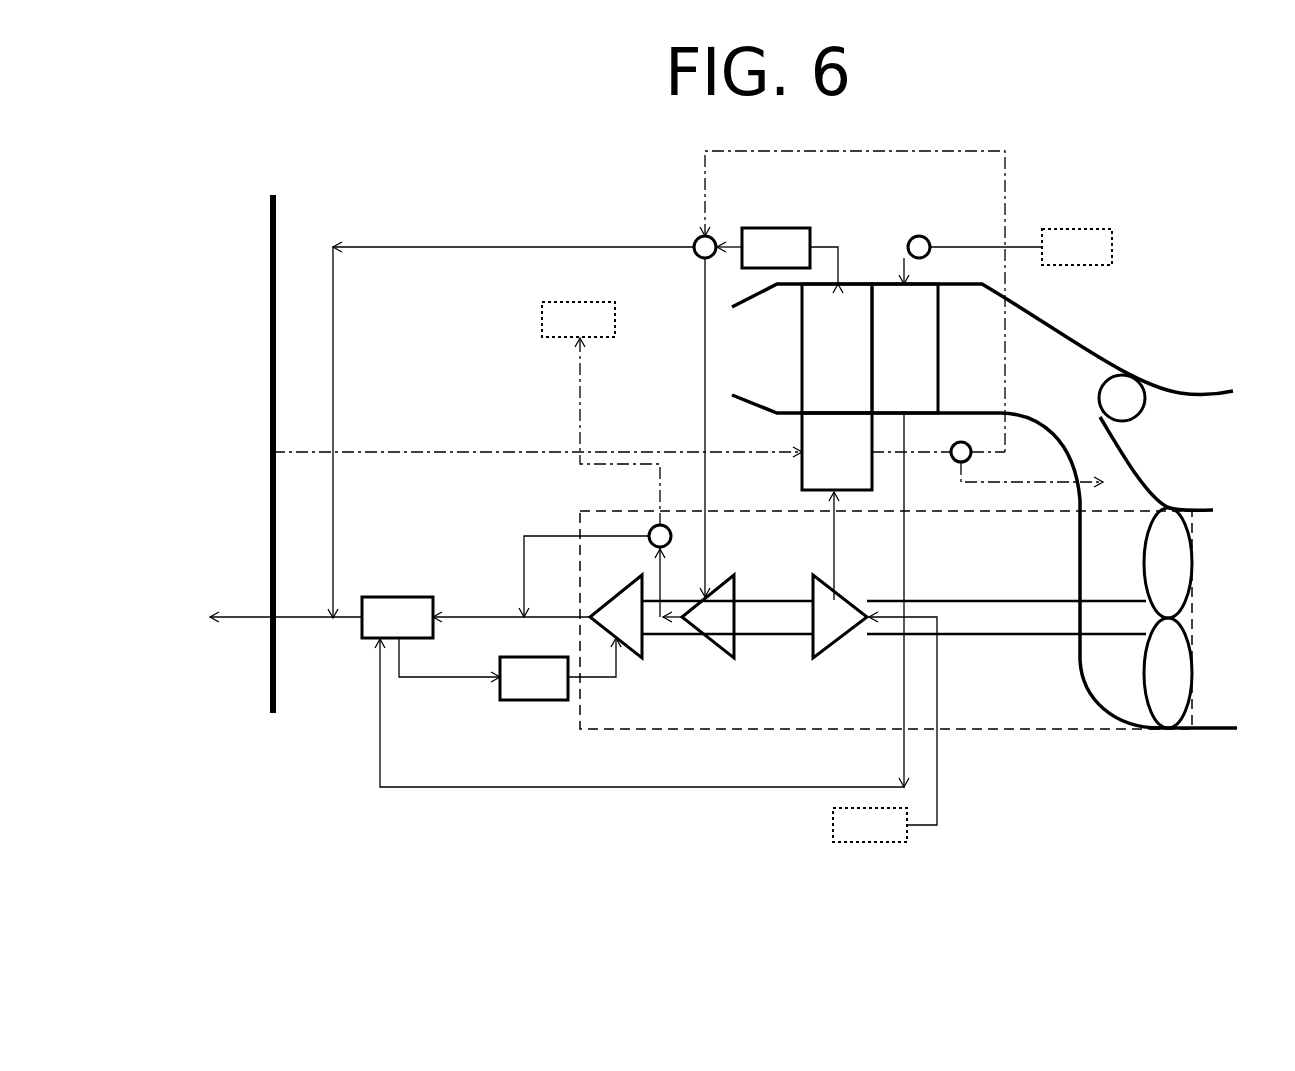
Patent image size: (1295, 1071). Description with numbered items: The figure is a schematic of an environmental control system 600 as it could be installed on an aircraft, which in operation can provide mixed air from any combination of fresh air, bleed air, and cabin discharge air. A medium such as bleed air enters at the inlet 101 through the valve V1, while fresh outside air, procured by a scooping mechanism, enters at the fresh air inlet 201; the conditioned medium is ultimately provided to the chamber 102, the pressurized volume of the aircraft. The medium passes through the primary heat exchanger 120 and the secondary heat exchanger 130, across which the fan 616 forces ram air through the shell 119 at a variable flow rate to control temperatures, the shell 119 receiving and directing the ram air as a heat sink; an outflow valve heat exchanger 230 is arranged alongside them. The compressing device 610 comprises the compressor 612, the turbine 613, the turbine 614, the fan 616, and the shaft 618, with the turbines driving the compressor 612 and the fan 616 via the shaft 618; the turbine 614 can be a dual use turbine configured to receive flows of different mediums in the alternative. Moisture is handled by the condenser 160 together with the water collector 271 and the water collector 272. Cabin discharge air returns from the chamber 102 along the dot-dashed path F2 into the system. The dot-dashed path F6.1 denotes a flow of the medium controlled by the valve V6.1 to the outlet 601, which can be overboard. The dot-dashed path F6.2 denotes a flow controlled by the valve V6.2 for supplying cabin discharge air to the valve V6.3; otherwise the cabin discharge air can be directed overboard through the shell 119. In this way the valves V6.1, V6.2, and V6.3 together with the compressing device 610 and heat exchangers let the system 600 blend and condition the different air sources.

The environmental control system 600 is at (1249, 111).
The chamber 102 is at (268, 193).
The inlet 101 is at (1077, 247).
The outlet 601 is at (578, 319).
The water collector 271 is at (758, 259).
The secondary heat exchanger 130 is at (819, 361).
The primary heat exchanger 120 is at (887, 361).
The outflow valve heat exchanger 230 is at (819, 464).
The shell 119 is at (1121, 372).
The condenser 160 is at (379, 629).
The water collector 272 is at (516, 689).
The turbine 613 is at (608, 628).
The turbine 614 is at (699, 628).
The compressor 612 is at (817, 628).
The shaft 618 is at (1042, 635).
The fan 616 is at (1125, 672).
The compressing device 610 is at (760, 731).
The inlet 201 is at (870, 825).
The valve V1 is at (909, 239).
The valve V6.1 is at (652, 527).
The valve V6.2 is at (955, 463).
The valve V6.3 is at (697, 238).
The path F2 is at (477, 450).
The path F6.1 is at (582, 388).
The path F6.2 is at (1008, 154).